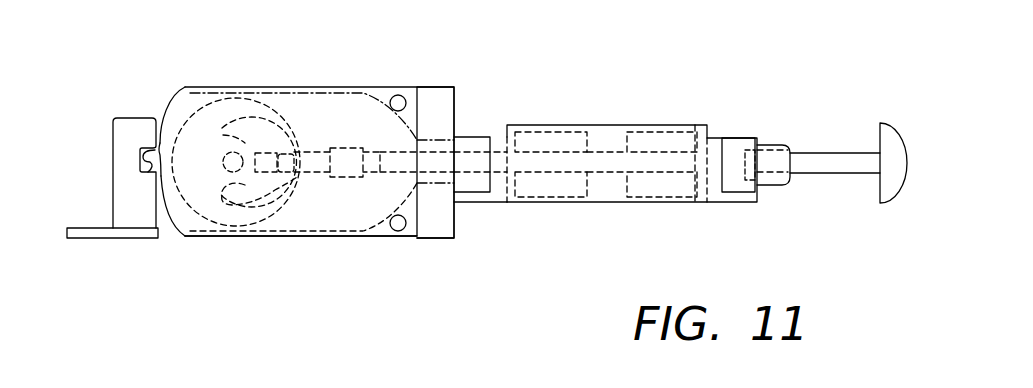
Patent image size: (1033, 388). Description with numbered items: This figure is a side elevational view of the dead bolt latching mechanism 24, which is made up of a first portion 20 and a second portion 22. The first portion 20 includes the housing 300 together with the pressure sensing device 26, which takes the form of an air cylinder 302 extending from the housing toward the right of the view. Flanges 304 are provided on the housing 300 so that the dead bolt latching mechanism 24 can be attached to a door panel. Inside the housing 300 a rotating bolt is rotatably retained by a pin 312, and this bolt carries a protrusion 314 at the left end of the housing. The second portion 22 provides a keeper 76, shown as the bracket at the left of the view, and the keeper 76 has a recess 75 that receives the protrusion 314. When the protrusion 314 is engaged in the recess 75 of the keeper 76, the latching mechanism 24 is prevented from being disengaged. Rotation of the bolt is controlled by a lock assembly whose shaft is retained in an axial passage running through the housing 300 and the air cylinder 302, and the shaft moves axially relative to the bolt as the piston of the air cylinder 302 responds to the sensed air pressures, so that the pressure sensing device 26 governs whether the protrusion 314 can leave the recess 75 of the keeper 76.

The first portion 20 is at (487, 235).
The second portion 22 is at (143, 250).
The dead bolt latching mechanism 24 is at (593, 242).
The pressure sensing device 26 is at (618, 112).
The recess 75 is at (148, 172).
The keeper 76 is at (125, 137).
The housing 300 is at (302, 87).
The air cylinder 302 is at (652, 202).
The flanges 304 is at (300, 238).
The pin 312 is at (233, 160).
The protrusion 314 is at (155, 147).